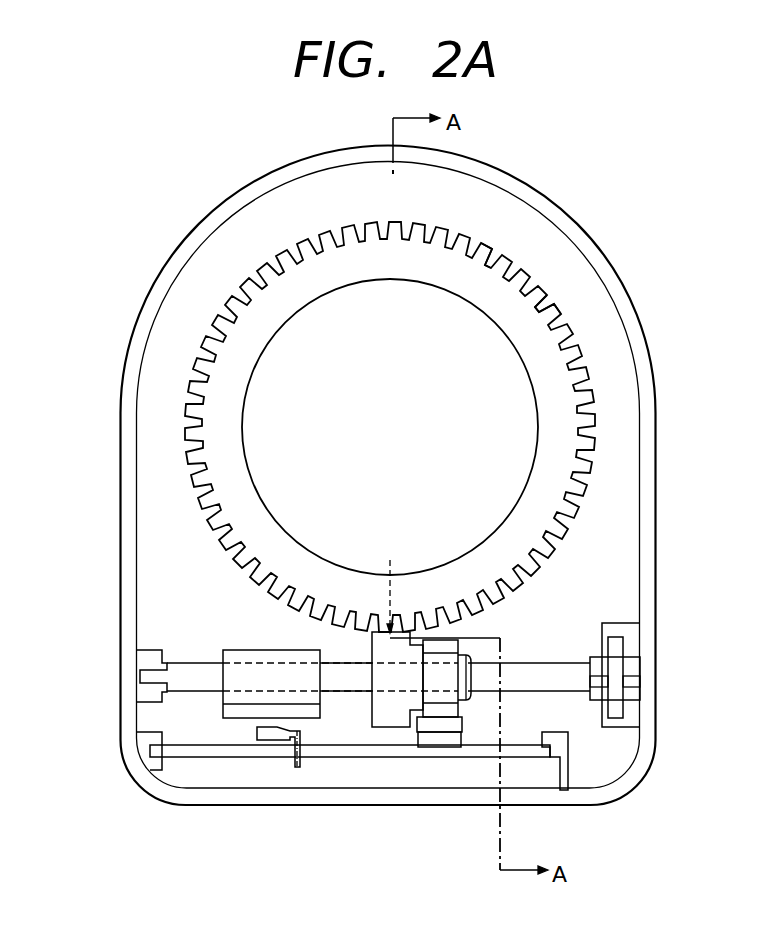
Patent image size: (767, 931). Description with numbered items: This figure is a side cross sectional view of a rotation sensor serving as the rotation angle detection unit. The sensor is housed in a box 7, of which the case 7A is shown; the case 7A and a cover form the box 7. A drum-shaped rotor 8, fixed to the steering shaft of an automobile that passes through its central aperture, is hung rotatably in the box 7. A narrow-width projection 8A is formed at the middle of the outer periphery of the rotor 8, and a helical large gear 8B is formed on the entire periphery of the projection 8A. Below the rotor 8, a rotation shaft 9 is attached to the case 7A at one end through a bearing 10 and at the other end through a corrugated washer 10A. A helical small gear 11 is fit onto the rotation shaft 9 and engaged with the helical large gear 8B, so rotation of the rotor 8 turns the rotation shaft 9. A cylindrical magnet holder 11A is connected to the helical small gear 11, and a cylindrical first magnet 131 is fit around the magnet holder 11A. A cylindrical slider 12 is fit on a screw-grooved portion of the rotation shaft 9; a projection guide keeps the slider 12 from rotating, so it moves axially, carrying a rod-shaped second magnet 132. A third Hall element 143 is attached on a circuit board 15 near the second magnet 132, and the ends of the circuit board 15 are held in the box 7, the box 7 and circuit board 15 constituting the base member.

The box 7 is at (600, 235).
The case 7A is at (650, 462).
The rotor 8 is at (606, 400).
The projection 8A is at (480, 273).
The helical large gear 8B is at (557, 300).
The rotation shaft 9 is at (517, 662).
The bearing 10 is at (618, 650).
The corrugated washer 10A is at (160, 702).
The helical small gear 11 is at (381, 729).
The magnet holder 11A is at (446, 700).
The slider 12 is at (223, 695).
The first magnet 131 is at (448, 643).
The second magnet 132 is at (247, 712).
The third Hall element 143 is at (275, 734).
The circuit board 15 is at (524, 758).